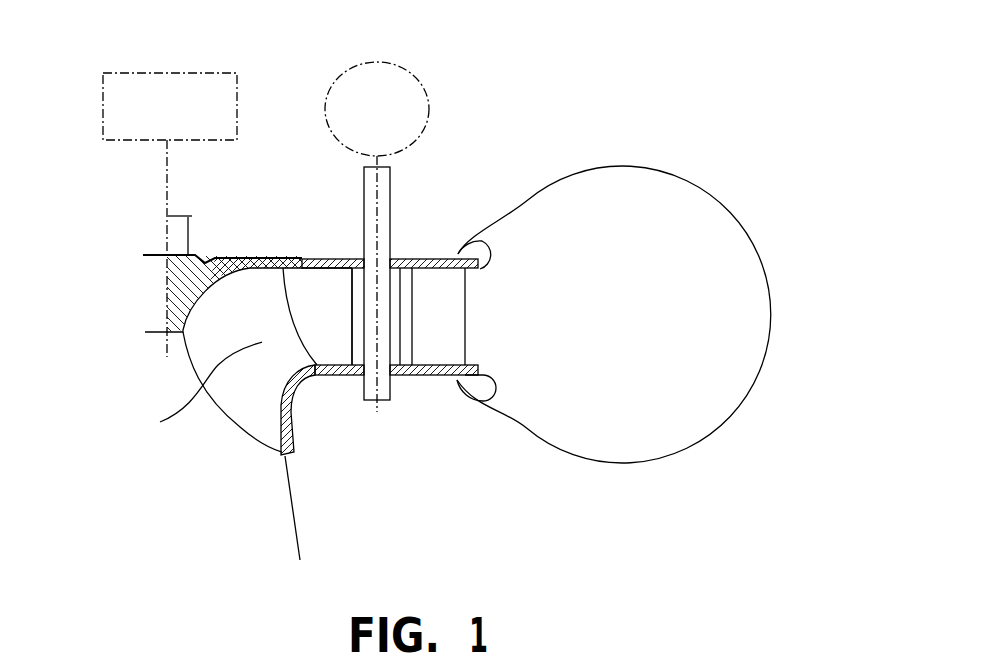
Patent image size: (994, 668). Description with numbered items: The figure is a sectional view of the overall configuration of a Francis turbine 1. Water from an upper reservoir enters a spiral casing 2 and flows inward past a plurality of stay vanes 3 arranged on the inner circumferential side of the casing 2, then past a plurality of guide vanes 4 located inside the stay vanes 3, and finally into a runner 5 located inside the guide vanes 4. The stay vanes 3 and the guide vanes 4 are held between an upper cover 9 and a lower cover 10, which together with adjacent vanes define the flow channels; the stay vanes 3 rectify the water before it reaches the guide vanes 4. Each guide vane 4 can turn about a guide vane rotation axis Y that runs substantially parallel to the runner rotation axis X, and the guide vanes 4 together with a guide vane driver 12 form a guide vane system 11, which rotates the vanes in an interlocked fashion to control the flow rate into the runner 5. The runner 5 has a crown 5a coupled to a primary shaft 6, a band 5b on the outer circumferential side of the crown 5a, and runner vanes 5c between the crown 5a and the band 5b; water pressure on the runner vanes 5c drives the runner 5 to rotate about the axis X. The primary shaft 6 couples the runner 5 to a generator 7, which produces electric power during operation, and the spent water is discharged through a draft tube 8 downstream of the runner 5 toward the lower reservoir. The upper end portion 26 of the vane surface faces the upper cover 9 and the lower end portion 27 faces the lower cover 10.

The Francis turbine 1 is at (696, 150).
The spiral casing 2 is at (595, 167).
The stay vanes 3 is at (444, 345).
The guide vanes 4 is at (406, 316).
The runner 5 is at (245, 448).
The crown 5a is at (222, 259).
The band 5b is at (292, 430).
The runner vanes 5c is at (160, 422).
The primary shaft 6 is at (190, 226).
The generator 7 is at (237, 105).
The draft tube 8 is at (292, 480).
The upper cover 9 is at (330, 259).
The lower cover 10 is at (341, 378).
The guide vane system 11 is at (395, 414).
The guide vane driver 12 is at (405, 67).
The upper end portion 26 is at (364, 276).
The lower end portion 27 is at (366, 355).
The runner rotation axis X is at (166, 283).
The guide vane rotation axis Y is at (393, 186).